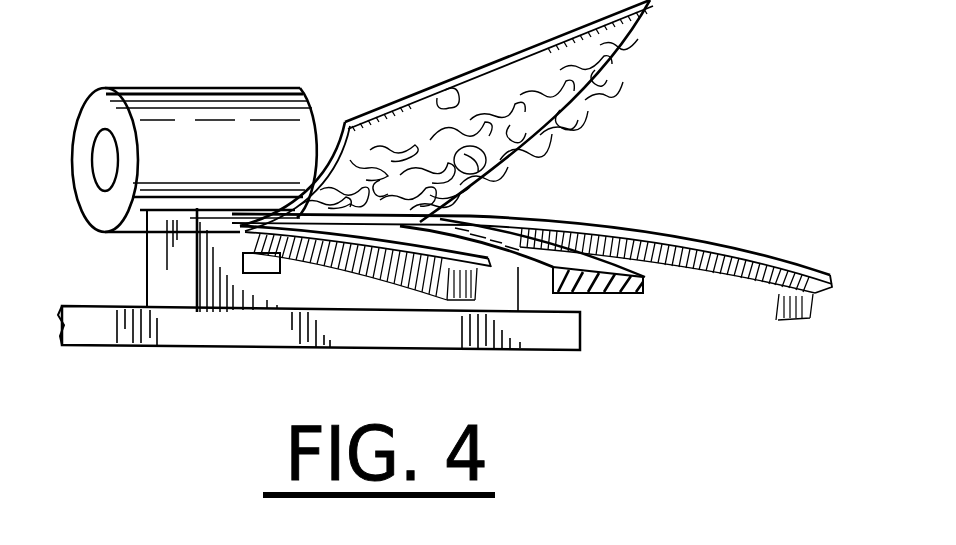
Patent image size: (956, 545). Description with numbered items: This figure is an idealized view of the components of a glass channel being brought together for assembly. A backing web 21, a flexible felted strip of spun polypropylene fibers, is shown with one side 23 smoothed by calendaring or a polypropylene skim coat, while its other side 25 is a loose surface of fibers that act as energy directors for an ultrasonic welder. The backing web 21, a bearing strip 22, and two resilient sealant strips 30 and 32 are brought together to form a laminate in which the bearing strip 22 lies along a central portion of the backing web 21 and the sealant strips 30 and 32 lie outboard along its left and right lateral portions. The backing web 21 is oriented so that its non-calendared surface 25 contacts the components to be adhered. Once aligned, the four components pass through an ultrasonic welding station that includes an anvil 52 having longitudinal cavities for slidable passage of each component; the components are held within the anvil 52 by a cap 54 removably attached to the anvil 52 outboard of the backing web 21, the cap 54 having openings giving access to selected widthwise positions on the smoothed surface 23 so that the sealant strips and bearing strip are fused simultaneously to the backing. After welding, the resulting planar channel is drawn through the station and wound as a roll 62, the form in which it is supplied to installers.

The backing web 21 is at (446, 115).
The bearing strip 22 is at (627, 296).
The smoothed side 23 is at (527, 45).
The loose fiber side 25 is at (565, 112).
The resilient sealant strip 30 is at (378, 272).
The resilient sealant strip 32 is at (778, 262).
The anvil 52 is at (152, 264).
The cap 54 is at (178, 212).
The roll 62 is at (194, 125).